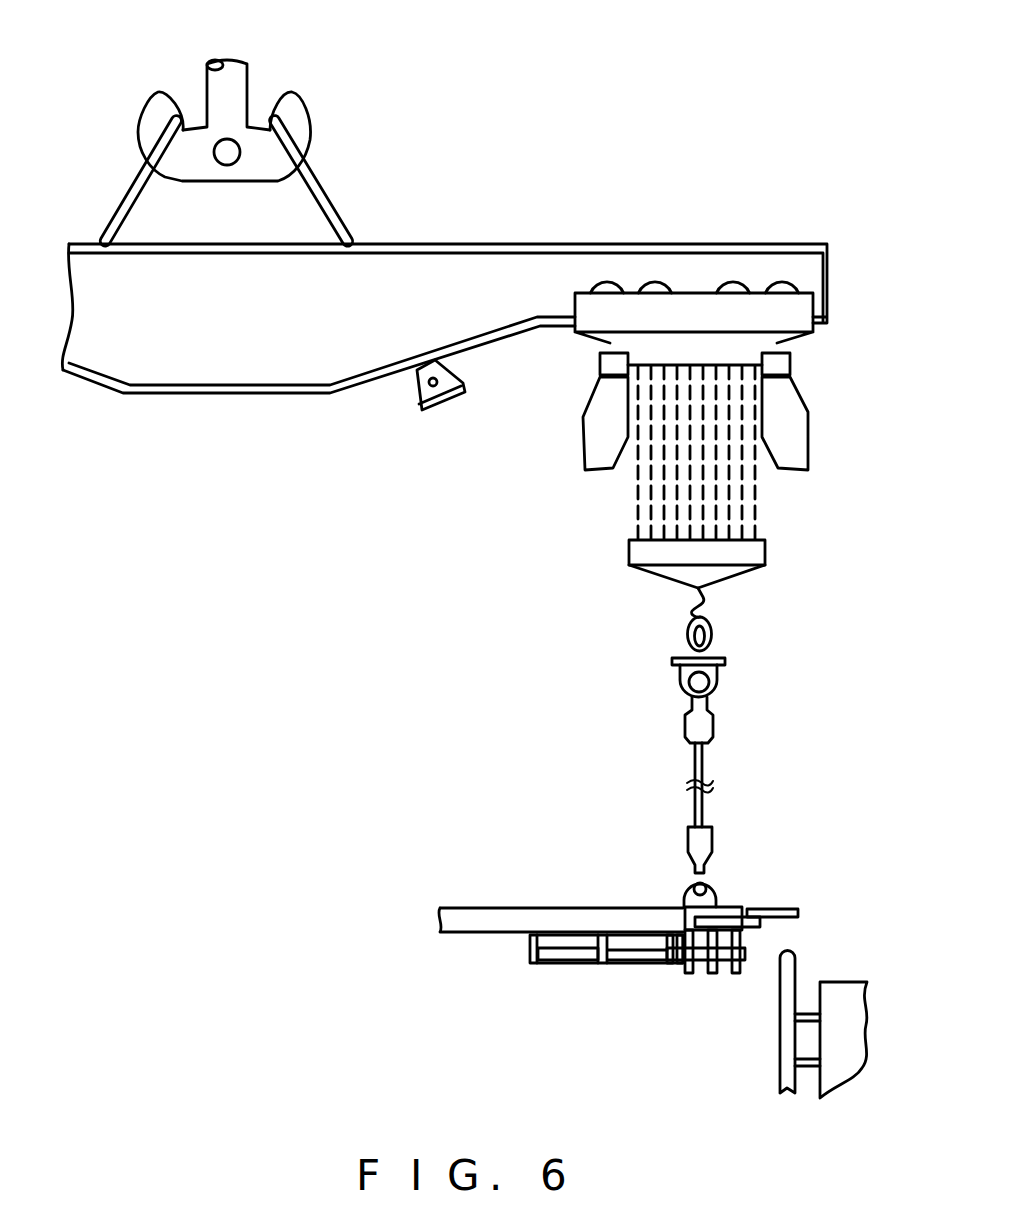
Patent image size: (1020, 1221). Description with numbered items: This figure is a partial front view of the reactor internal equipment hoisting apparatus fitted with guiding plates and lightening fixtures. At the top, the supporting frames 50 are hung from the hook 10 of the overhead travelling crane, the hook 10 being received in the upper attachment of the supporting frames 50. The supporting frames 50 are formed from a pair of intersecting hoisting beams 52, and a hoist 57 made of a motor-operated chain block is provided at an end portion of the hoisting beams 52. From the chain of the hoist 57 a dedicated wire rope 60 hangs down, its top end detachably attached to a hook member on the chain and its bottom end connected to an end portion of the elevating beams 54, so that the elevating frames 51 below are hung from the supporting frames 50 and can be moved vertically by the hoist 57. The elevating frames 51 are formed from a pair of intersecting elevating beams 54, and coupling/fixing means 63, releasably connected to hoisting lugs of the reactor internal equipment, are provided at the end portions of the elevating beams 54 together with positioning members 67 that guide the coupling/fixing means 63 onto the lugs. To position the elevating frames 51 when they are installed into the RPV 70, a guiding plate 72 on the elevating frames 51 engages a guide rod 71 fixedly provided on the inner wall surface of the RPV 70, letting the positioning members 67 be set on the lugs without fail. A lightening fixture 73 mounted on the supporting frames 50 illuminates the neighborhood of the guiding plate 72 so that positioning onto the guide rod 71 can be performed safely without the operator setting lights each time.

The hook 10 is at (232, 88).
The supporting frames 50 is at (563, 244).
The hoisting beams 52 is at (694, 244).
The hoists 57 is at (800, 395).
The lightening fixtures 73 is at (450, 398).
The dedicated wire ropes 60 is at (705, 760).
The elevating frames 51 is at (623, 937).
The elevating beams 54 is at (473, 908).
The coupling/fixing means 63 is at (598, 977).
The positioning members 67 is at (748, 975).
The guiding plates 72 is at (767, 906).
The guide rods 71 is at (793, 953).
The RPV 70 is at (847, 981).